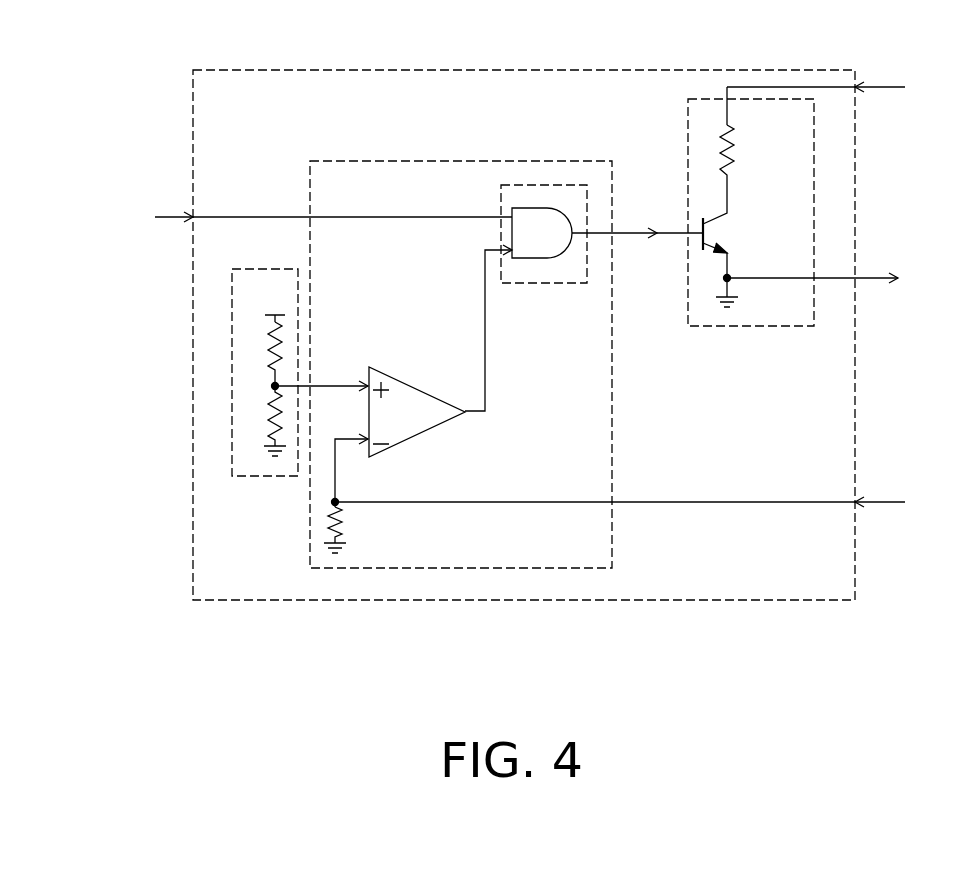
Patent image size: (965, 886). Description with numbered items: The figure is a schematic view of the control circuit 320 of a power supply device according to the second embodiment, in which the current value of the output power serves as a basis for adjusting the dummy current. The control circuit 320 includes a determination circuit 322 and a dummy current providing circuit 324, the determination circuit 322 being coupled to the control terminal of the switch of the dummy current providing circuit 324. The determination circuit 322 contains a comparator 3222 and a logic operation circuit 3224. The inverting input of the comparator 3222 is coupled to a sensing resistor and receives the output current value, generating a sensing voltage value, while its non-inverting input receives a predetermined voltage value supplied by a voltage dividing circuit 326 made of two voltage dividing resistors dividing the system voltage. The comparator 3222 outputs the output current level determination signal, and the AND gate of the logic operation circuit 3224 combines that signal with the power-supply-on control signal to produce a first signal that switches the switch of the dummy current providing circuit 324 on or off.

The control circuit 320 is at (378, 70).
The determination circuit 322 is at (453, 160).
The logic operation circuit 3224 is at (552, 185).
The comparator 3222 is at (413, 385).
The dummy current providing circuit 324 is at (697, 99).
The voltage dividing circuit 326 is at (232, 297).